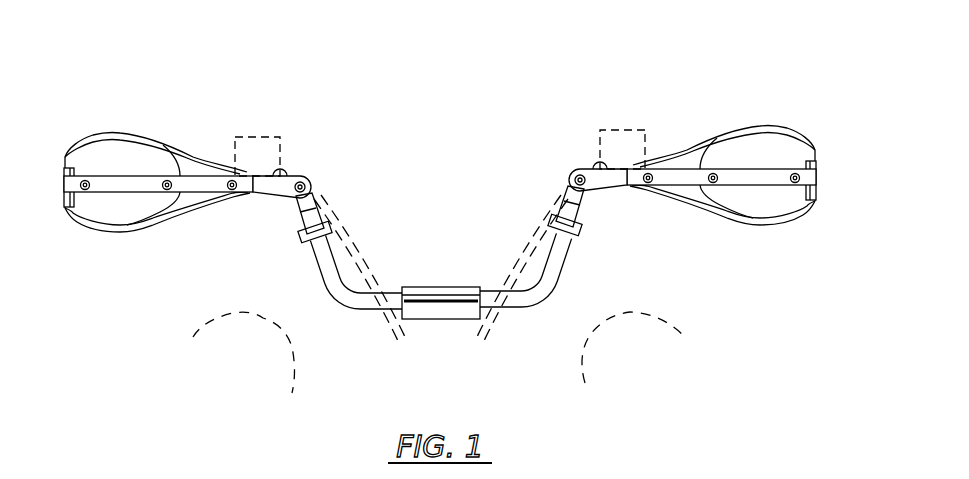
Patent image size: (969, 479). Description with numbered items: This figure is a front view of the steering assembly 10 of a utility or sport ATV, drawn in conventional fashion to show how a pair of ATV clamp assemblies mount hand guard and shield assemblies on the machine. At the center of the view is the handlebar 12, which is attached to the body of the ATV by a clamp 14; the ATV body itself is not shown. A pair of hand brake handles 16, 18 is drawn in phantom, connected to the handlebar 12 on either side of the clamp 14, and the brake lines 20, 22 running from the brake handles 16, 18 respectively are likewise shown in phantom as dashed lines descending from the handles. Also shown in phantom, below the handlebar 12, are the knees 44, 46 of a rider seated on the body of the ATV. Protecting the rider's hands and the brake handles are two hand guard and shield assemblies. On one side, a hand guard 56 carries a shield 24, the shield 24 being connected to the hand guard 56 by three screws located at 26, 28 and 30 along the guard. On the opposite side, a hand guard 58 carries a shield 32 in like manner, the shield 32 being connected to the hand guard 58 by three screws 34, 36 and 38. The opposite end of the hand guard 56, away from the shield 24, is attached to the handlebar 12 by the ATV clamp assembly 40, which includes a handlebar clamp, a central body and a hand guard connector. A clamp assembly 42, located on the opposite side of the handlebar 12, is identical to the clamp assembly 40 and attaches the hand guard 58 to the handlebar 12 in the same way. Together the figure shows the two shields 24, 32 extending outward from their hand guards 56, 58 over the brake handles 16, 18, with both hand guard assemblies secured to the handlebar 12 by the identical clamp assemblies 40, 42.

The steering assembly 10 is at (445, 238).
The handlebar 12 is at (348, 310).
The clamp 14 is at (428, 287).
The hand brake handle 16 is at (268, 136).
The hand brake handle 18 is at (615, 131).
The brake line 20 is at (357, 230).
The brake line 22 is at (530, 218).
The shield 24 is at (132, 135).
The screw 26 is at (92, 192).
The screw 28 is at (170, 193).
The screw 30 is at (235, 193).
The shield 32 is at (748, 124).
The screw 34 is at (648, 187).
The screw 36 is at (710, 187).
The screw 38 is at (793, 187).
The ATV clamp assembly 40 is at (300, 250).
The clamp assembly 42 is at (582, 250).
The knee of rider 44 is at (270, 320).
The knee of rider 46 is at (630, 312).
The hand guard 56 is at (284, 183).
The hand guard 58 is at (590, 180).